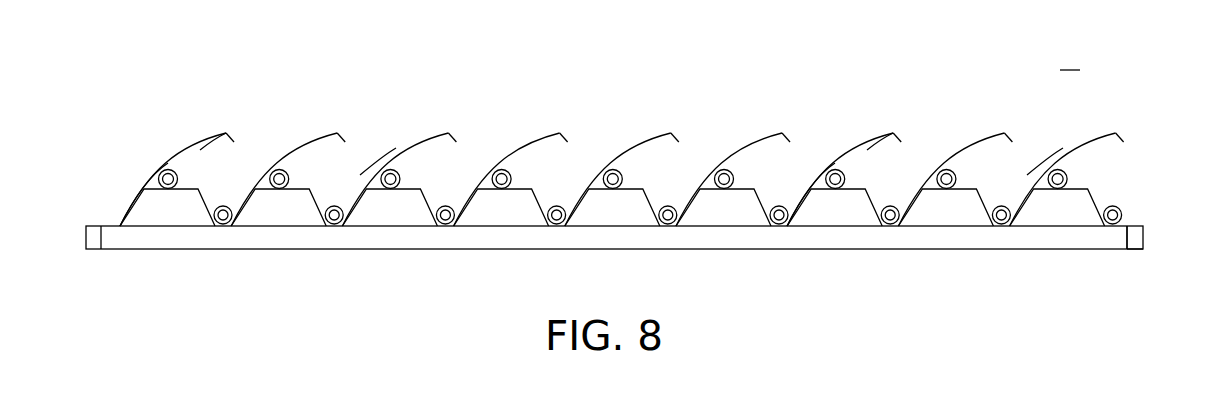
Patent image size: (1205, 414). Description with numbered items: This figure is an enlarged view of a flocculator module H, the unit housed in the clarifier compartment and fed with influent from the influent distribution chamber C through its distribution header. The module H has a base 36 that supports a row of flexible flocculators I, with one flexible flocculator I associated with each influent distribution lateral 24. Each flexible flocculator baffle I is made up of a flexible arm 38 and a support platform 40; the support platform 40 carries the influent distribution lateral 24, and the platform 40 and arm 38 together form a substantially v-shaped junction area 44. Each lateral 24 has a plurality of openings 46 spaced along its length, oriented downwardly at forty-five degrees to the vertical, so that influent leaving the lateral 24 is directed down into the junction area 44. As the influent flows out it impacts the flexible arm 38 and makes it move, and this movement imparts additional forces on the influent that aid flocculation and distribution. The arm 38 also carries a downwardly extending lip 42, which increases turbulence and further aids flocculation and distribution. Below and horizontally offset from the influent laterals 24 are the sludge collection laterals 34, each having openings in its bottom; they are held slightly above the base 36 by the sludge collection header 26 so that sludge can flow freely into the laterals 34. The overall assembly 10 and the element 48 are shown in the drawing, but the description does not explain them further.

The heat exchanger assembly 10 is at (665, 0).
The influent distribution lateral 24 is at (162, 165).
The sludge collection header 26 is at (1053, 218).
The sludge collection lateral 34 is at (235, 217).
The base 36 is at (380, 237).
The flexible arm 38 is at (187, 147).
The support platform 40 is at (168, 208).
The downwardly extending lip 42 is at (455, 135).
The v-shaped junction area 44 is at (380, 170).
The openings 46 is at (270, 172).
The upper portion 48 is at (727, 17).
The influent distribution chamber C is at (312, 0).
The flocculator module H is at (1094, 62).
The flexible flocculator I is at (214, 124).